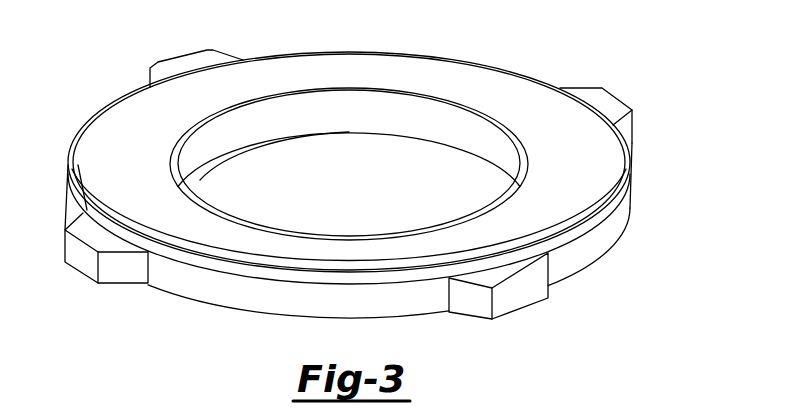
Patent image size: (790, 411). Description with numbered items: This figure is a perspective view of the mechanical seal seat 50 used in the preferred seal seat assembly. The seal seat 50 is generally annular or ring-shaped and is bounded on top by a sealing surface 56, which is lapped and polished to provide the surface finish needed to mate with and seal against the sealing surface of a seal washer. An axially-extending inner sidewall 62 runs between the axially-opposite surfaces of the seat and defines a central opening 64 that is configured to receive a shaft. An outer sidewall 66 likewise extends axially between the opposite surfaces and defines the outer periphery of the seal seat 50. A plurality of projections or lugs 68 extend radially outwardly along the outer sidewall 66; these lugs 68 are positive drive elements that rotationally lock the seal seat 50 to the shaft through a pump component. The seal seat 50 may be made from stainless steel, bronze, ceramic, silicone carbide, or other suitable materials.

The seal seat 50 is at (533, 57).
The sealing surface 56 is at (420, 79).
The inner sidewall 62 is at (402, 118).
The central opening 64 is at (248, 176).
The outer sidewall 66 is at (602, 231).
The lugs 68 is at (178, 66).